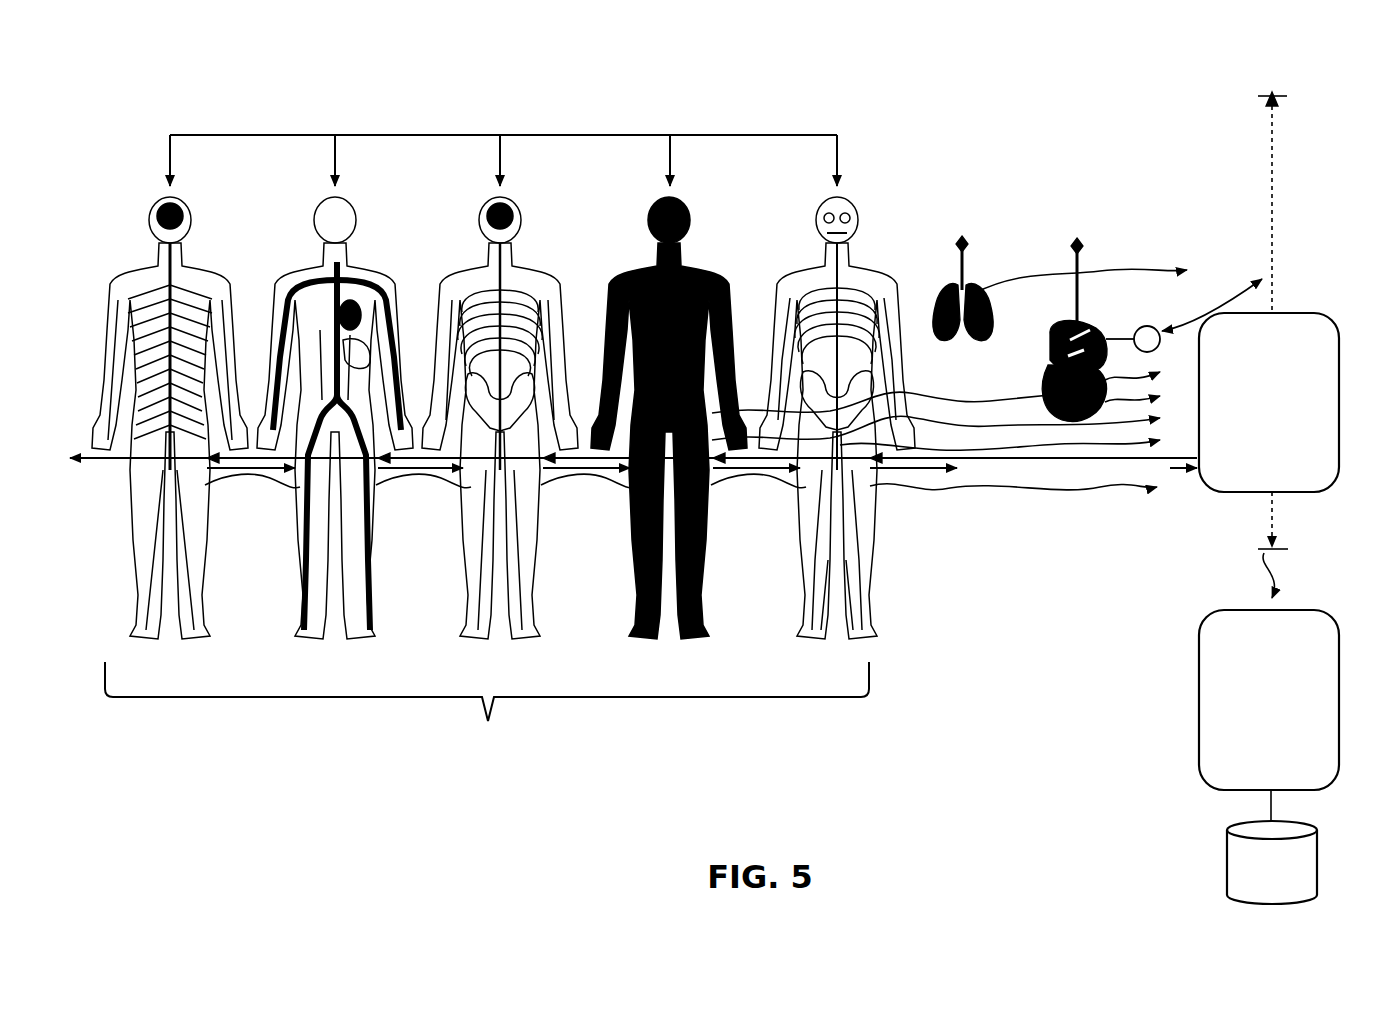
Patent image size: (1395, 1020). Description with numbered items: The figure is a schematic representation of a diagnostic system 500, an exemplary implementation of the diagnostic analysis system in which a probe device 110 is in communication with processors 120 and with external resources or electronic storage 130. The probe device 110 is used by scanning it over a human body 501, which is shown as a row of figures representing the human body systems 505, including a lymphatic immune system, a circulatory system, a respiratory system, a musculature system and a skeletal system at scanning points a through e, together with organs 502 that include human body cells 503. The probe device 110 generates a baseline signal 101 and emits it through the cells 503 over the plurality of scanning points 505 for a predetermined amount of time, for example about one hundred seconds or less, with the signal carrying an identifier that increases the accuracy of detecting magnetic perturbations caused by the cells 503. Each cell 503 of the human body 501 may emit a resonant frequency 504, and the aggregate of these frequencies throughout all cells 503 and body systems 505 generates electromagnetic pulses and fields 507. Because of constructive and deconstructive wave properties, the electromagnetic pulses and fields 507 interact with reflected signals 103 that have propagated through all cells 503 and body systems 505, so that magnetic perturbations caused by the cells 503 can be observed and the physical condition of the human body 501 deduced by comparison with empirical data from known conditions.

The diagnostic system 500 is at (997, 90).
The human body systems 505 is at (1268, 92).
The human body 501 is at (503, 484).
The baseline signal 101 is at (241, 456).
The reflected signals 103 is at (576, 479).
The probe device 110 is at (1340, 394).
The processors 120 is at (1269, 700).
The electronic storage 130 is at (1272, 847).
The organs 502 is at (1003, 320).
The cells 503 is at (1140, 329).
The resonant frequency 504 is at (881, 395).
The electromagnetic pulses and fields 507 is at (936, 423).